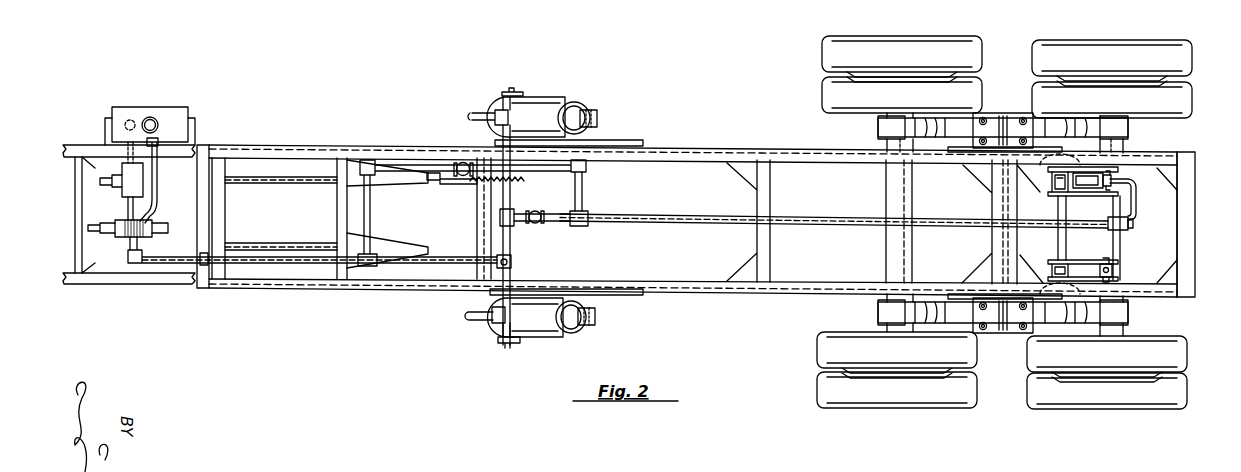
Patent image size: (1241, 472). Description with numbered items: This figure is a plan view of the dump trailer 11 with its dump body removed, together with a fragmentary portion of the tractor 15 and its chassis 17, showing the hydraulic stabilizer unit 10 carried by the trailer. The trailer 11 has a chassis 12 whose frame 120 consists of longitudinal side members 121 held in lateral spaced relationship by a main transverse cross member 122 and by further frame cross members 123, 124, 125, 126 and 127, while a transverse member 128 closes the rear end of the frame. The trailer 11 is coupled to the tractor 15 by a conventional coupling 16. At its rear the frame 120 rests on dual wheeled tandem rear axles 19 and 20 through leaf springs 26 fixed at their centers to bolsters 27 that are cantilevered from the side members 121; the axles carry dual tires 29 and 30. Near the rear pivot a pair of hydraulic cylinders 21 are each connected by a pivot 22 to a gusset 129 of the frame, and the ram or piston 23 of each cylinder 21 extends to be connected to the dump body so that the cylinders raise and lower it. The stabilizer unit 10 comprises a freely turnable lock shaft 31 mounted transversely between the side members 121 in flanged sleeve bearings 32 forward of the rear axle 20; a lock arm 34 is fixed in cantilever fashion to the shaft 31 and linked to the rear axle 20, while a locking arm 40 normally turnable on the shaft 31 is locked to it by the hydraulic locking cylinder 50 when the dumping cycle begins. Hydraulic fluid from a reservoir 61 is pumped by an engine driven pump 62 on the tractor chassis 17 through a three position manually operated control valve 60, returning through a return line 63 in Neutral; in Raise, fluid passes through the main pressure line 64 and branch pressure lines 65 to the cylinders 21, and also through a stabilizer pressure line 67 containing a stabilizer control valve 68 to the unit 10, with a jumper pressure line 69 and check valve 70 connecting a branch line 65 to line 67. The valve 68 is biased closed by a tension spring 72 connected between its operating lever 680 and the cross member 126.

The hydraulic stabilizer unit 10 is at (1057, 241).
The dump trailer 11 is at (878, 33).
The chassis 12 is at (770, 147).
The tractor 15 is at (115, 283).
The coupling 16 is at (357, 168).
The chassis of the tractor 17 is at (177, 278).
The rear axle 19 is at (900, 187).
The rear axle 20 is at (1117, 243).
The hydraulic cylinders 21 is at (537, 105).
The pivot 22 is at (510, 90).
The ram or piston 23 is at (598, 115).
The leaf springs 26 is at (880, 125).
The bolsters 27 is at (1007, 120).
The dual tire 29 is at (827, 83).
The dual tire 30 is at (1182, 92).
The lock shaft 31 is at (1055, 203).
The flanged sleeve bearings 32 is at (1072, 157).
The lock arm 34 is at (1075, 260).
The locking arm 40 is at (1093, 165).
The hydraulic locking cylinder 50 is at (1088, 180).
The hydraulic control valve 60 is at (143, 223).
The reservoir 61 is at (172, 112).
The hydraulic pump 62 is at (132, 187).
The return line 63 is at (157, 176).
The main pressure line 64 is at (152, 258).
The branch pressure lines 65 is at (473, 113).
The stabilizer pressure line 67 is at (413, 165).
The stabilizer control valve 68 is at (463, 163).
The jumper pressure line 69 is at (558, 220).
The check valve 70 is at (538, 208).
The tension spring 72 is at (483, 183).
The frame 120 is at (349, 297).
The side members 121 is at (680, 150).
The main transverse cross member 122 is at (992, 237).
The frame cross member 123 is at (205, 150).
The frame cross member 124 is at (340, 208).
The frame cross member 125 is at (482, 227).
The frame cross member 126 is at (517, 257).
The frame cross member 127 is at (763, 240).
The rear end member 128 is at (1188, 213).
The gusset 129 is at (610, 140).
The operating lever 680 is at (437, 183).